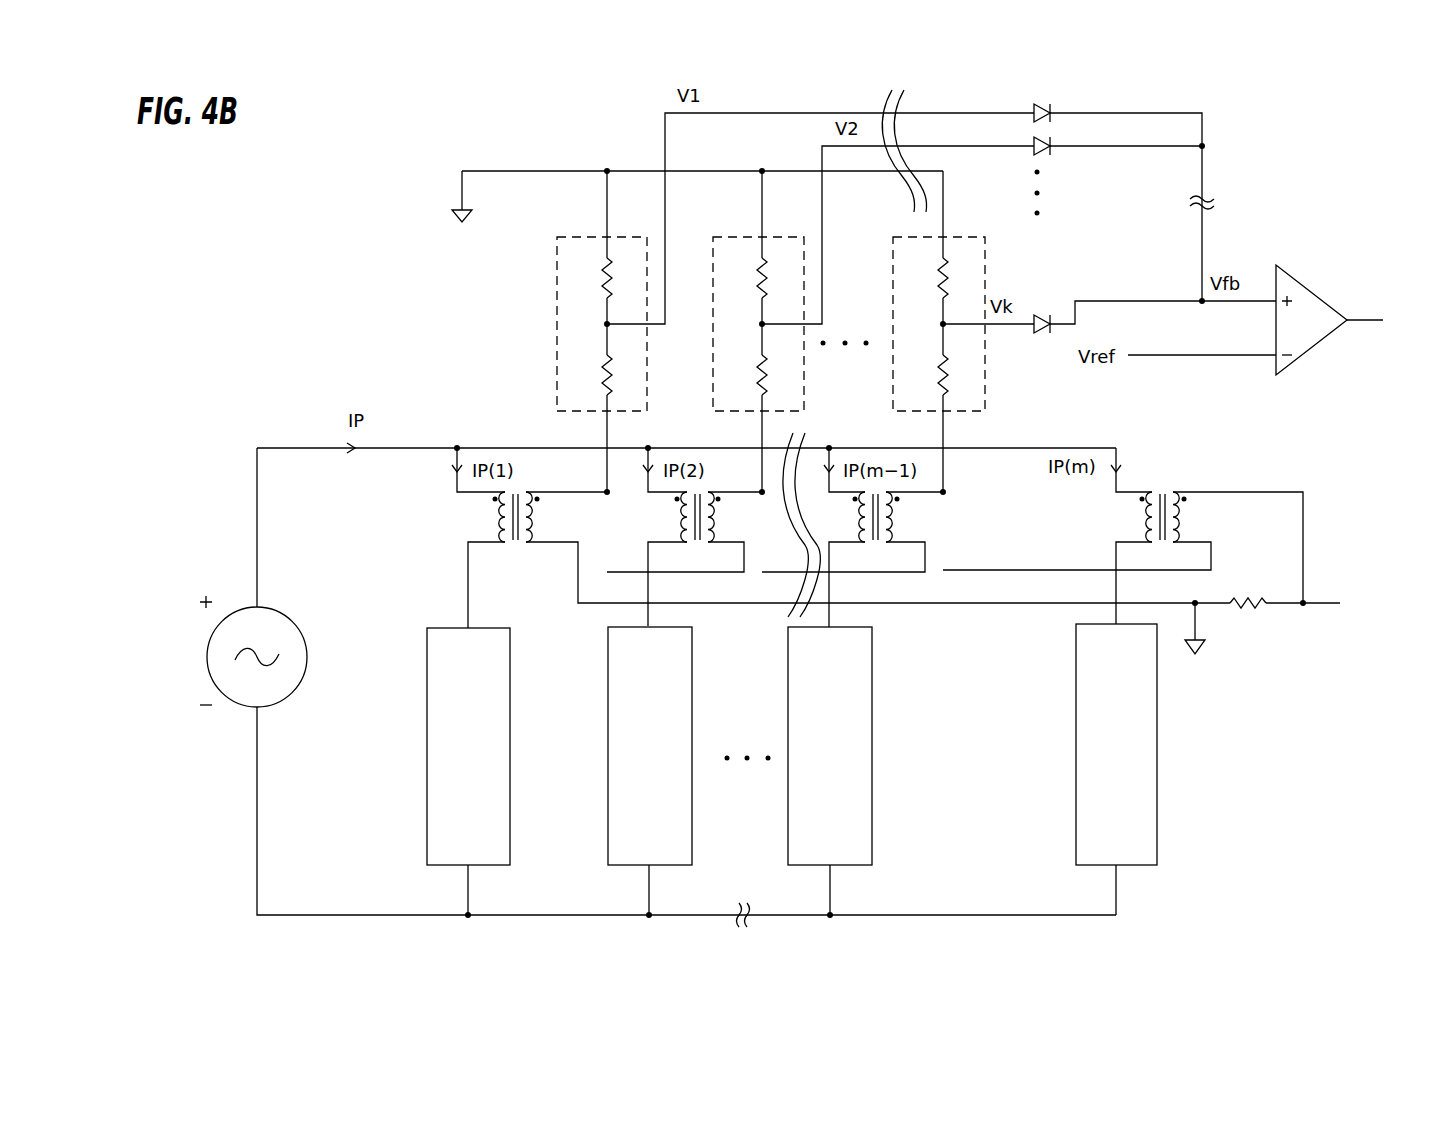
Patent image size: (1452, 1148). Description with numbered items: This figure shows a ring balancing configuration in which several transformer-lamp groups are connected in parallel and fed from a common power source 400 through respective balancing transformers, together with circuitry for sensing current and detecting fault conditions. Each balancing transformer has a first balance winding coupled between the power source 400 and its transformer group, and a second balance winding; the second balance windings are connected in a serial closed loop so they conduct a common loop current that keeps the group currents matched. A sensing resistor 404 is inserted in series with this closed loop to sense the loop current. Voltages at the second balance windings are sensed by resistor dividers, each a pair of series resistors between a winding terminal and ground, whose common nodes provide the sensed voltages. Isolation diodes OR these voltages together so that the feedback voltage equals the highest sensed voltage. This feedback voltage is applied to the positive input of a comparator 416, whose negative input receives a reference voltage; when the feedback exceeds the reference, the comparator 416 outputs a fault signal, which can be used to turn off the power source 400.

The common power source 400 is at (278, 607).
The comparator 416 is at (1332, 277).
The sensing resistor 404 is at (1262, 640).